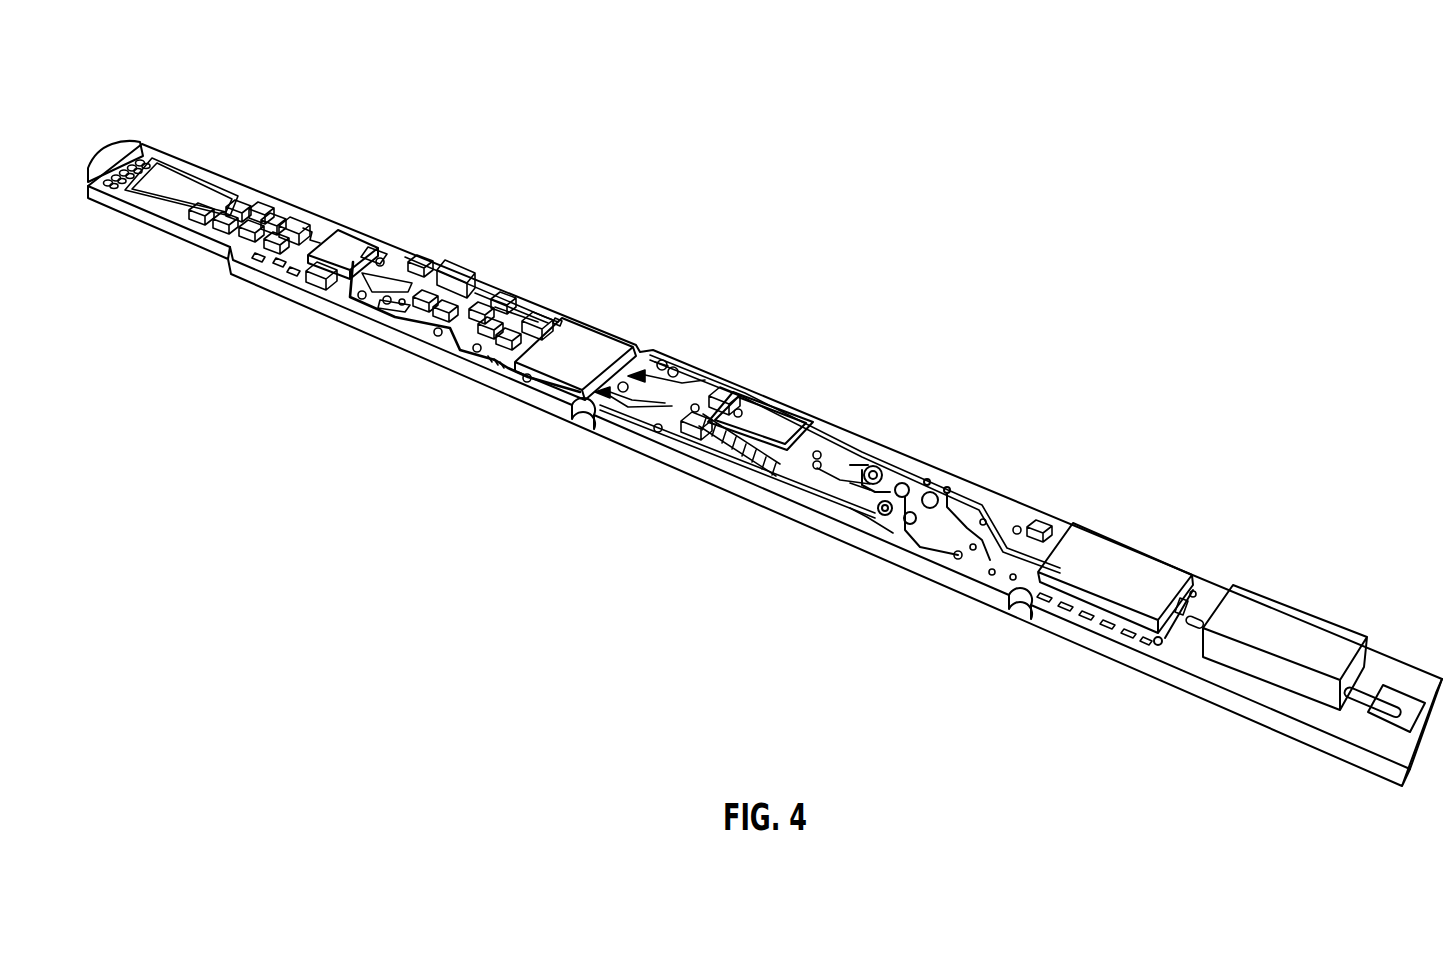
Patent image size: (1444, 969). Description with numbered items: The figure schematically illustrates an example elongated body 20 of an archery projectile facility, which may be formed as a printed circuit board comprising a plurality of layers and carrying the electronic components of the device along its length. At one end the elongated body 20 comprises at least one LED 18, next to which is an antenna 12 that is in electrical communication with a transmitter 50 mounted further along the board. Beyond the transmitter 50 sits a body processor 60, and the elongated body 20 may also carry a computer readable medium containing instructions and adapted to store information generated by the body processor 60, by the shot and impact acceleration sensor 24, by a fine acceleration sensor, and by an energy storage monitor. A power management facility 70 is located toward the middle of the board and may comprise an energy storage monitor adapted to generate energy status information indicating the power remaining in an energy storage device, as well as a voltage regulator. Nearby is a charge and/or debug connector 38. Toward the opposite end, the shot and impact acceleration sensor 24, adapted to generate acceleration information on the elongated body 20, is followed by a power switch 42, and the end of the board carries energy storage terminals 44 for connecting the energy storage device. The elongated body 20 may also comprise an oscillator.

The antenna 12 is at (192, 224).
The LED 18 is at (135, 140).
The elongated body 20 is at (1267, 697).
The shot and impact acceleration sensor 24 is at (1118, 560).
The charge and/or debug connector 38 is at (877, 514).
The power switch 42 is at (1293, 620).
The energy storage terminals 44 is at (1403, 697).
The transmitter 50 is at (353, 242).
The body processor 60 is at (585, 338).
The power management facility 70 is at (803, 428).